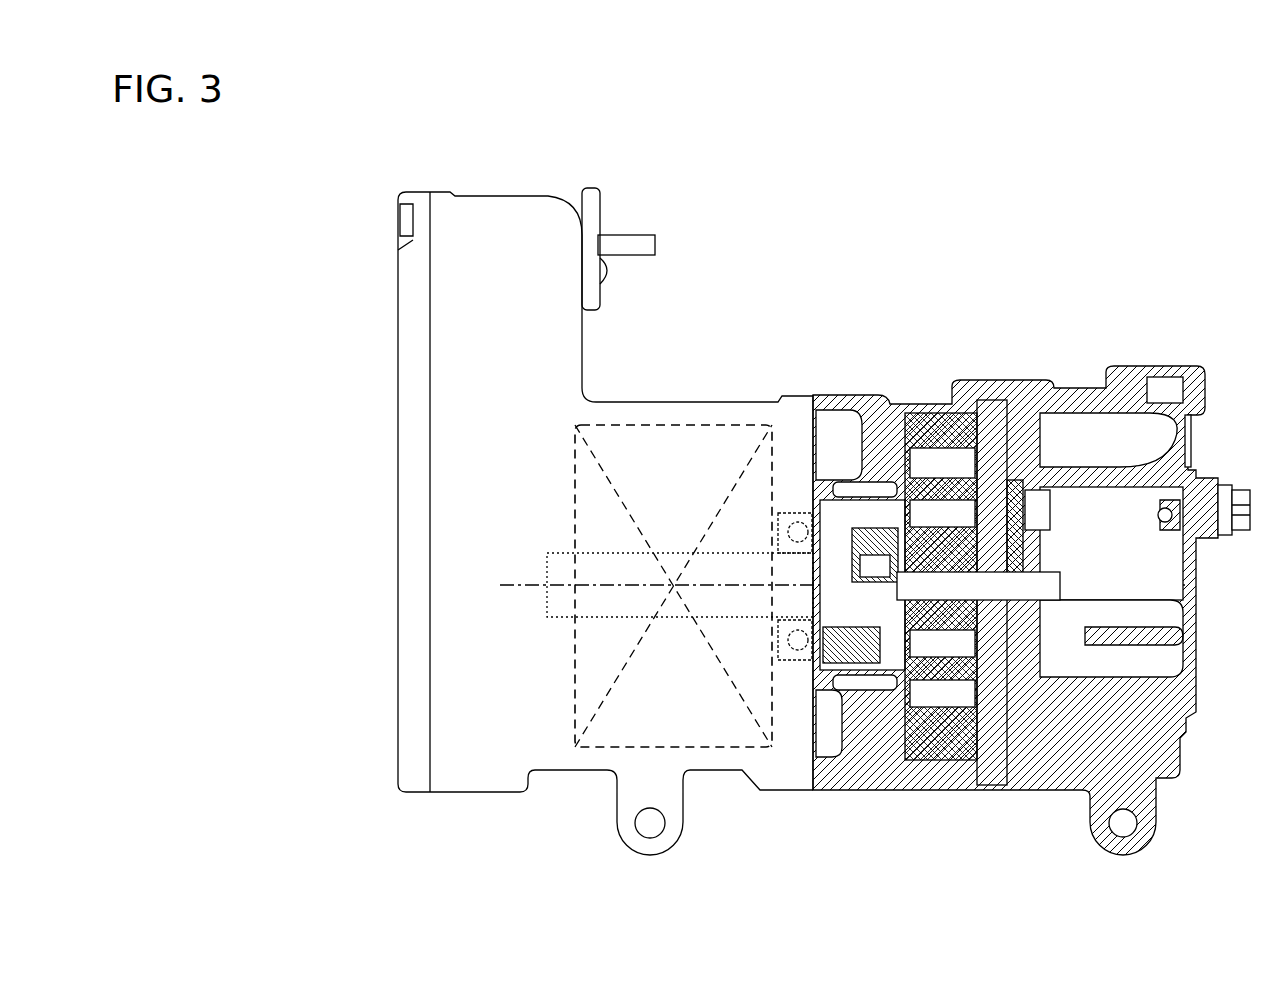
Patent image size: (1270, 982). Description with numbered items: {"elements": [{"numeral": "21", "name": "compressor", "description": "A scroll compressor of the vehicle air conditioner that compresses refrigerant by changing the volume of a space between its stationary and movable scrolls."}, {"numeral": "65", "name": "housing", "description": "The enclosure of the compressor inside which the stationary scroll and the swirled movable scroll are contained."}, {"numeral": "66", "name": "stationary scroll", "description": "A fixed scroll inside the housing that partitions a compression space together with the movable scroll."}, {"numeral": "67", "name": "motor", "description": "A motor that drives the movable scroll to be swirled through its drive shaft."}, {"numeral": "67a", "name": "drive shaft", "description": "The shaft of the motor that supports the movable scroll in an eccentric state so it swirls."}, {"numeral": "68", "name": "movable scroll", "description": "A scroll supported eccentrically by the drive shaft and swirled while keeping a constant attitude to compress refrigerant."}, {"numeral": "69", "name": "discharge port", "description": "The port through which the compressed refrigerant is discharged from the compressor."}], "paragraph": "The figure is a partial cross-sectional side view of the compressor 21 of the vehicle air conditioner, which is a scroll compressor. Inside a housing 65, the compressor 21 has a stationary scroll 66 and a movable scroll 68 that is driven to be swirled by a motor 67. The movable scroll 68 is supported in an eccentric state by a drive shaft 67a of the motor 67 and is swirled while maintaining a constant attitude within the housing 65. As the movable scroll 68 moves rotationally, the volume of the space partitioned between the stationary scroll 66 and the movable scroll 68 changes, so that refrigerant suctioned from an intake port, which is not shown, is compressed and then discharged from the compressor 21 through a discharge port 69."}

The electric motor unit 21 is at (1092, 280).
The motor housing 65 is at (1158, 800).
The rotor 66 is at (950, 712).
The control board 67 is at (715, 750).
The electronic component 67a is at (745, 552).
The stator 68 is at (933, 442).
The shaft 69 is at (1185, 590).